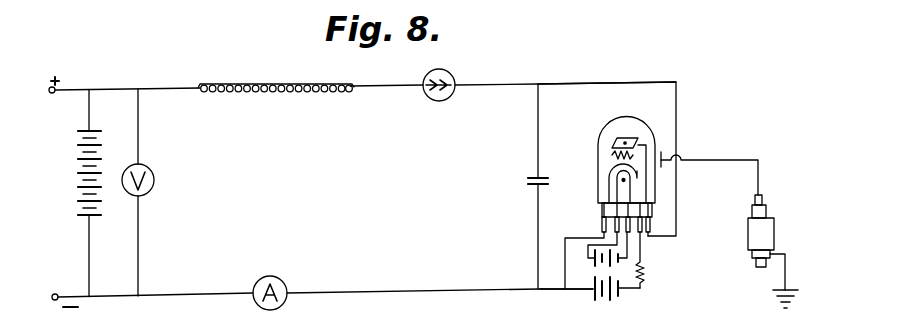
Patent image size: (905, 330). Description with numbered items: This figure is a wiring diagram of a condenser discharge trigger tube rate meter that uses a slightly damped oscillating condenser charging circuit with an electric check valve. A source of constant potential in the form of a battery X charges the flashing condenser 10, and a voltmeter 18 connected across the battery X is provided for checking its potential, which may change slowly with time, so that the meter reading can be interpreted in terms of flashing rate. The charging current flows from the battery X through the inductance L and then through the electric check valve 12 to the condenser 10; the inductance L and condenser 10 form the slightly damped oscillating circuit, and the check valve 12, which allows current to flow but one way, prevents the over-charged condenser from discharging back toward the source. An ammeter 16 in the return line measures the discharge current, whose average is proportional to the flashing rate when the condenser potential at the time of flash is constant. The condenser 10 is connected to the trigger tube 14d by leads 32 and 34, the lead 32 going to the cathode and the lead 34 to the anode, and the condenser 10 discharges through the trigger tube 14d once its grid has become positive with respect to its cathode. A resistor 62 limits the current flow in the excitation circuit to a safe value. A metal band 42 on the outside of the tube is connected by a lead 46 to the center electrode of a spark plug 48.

The battery X is at (75, 204).
The inductance L is at (262, 94).
The voltmeter 18 is at (161, 159).
The electric check valve 12 is at (432, 102).
The ammeter 16 is at (283, 276).
The condenser 10 is at (535, 183).
The lead 34 is at (618, 82).
The trigger tube 14d is at (598, 198).
The metal band 42 is at (669, 151).
The lead 46 is at (734, 156).
The spark plug 48 is at (770, 226).
The resistor 62 is at (645, 277).
The lead 32 is at (560, 291).